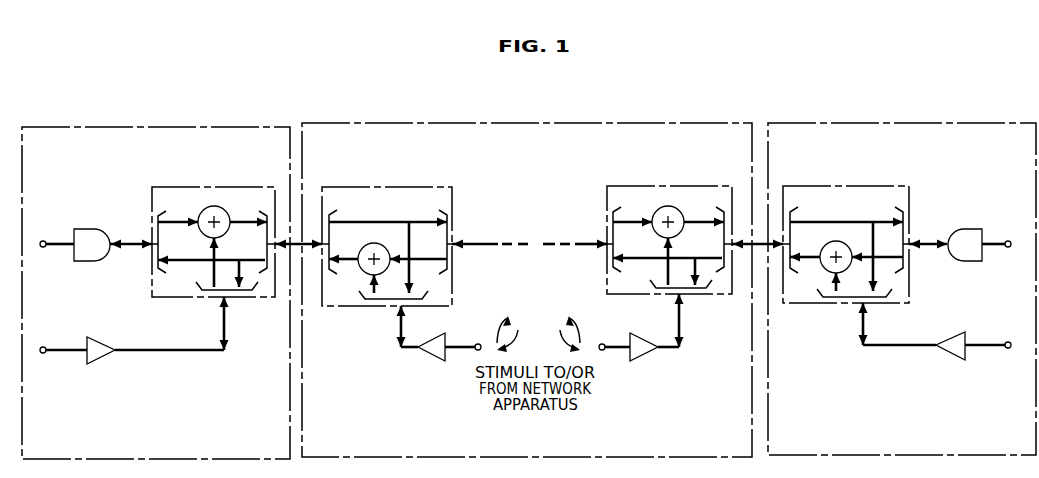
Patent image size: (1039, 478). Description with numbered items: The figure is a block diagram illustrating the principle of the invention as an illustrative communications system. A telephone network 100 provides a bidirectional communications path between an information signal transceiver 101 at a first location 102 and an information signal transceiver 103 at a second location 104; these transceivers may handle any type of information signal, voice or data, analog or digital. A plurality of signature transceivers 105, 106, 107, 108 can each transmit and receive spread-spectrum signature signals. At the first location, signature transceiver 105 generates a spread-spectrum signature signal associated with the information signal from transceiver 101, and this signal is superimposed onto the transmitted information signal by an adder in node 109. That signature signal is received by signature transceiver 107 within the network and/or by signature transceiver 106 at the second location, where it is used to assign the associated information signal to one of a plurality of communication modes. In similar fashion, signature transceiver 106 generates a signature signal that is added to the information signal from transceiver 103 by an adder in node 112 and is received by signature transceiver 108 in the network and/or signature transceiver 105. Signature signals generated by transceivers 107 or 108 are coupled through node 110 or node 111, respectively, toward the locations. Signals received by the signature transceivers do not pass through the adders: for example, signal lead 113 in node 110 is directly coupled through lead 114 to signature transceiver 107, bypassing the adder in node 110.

The telephone network 100 is at (379, 122).
The information signal transceiver 101 is at (87, 227).
The first location 102 is at (107, 125).
The information signal transceiver 103 is at (970, 222).
The second location 104 is at (853, 122).
The signature transceiver 105 is at (103, 360).
The signature transceiver 106 is at (953, 357).
The signature transceiver 107 is at (430, 357).
The signature transceiver 108 is at (645, 357).
The node 109 is at (247, 187).
The node 110 is at (415, 186).
The node 111 is at (700, 186).
The node 112 is at (878, 186).
The signal lead 113 is at (414, 269).
The lead 114 is at (394, 323).